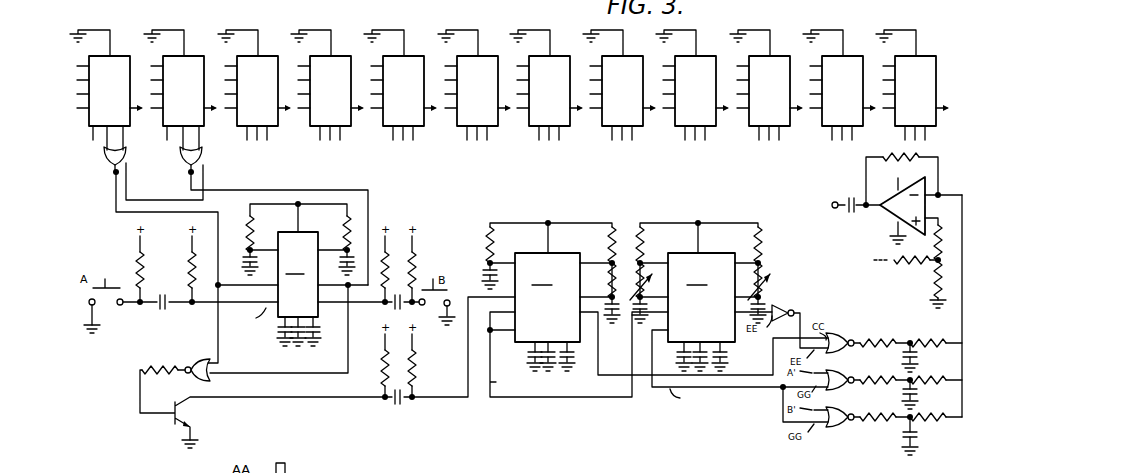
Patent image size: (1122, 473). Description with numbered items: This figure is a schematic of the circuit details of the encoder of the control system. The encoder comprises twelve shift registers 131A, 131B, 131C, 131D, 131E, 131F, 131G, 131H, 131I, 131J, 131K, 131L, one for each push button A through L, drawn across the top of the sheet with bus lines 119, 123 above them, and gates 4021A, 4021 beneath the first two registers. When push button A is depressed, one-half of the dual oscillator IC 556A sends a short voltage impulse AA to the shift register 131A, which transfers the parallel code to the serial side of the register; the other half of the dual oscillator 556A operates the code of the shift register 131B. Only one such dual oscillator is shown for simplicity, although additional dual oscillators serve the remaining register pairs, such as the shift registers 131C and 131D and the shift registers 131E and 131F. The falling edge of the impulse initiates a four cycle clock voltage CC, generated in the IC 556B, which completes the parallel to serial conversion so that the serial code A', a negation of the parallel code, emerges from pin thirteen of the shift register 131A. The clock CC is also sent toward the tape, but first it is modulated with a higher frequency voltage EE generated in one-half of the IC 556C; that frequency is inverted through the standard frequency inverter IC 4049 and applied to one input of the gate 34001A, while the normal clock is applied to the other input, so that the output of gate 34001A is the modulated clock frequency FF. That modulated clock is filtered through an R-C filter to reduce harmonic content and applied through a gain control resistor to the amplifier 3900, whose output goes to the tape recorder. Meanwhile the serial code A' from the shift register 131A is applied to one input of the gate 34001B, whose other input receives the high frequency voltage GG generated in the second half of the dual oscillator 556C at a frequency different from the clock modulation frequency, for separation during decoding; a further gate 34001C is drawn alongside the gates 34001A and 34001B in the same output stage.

The bus line 119 is at (302, 8).
The bus line 123 is at (360, 9).
The shift register 131A is at (104, 85).
The shift register 131B is at (178, 85).
The shift register 131C is at (253, 80).
The shift register 131D is at (327, 80).
The shift register 131E is at (399, 80).
The shift register 131F is at (473, 80).
The shift register 131G is at (546, 80).
The shift register 131H is at (619, 80).
The shift register 131I is at (690, 80).
The shift register 131J is at (764, 80).
The shift register 131K is at (839, 80).
The shift register 131L is at (911, 80).
The OR gate 4021A is at (161, 254).
The OR gate 4021 is at (274, 216).
The dual oscillator IC 556A is at (308, 267).
The IC 556B is at (655, 302).
The IC 556C is at (729, 315).
The frequency inverter IC 4049 is at (782, 308).
The amplifier 3900 is at (896, 208).
The gate 34001A is at (842, 334).
The gate 34001B is at (844, 377).
The NOR gate 34001C is at (842, 414).